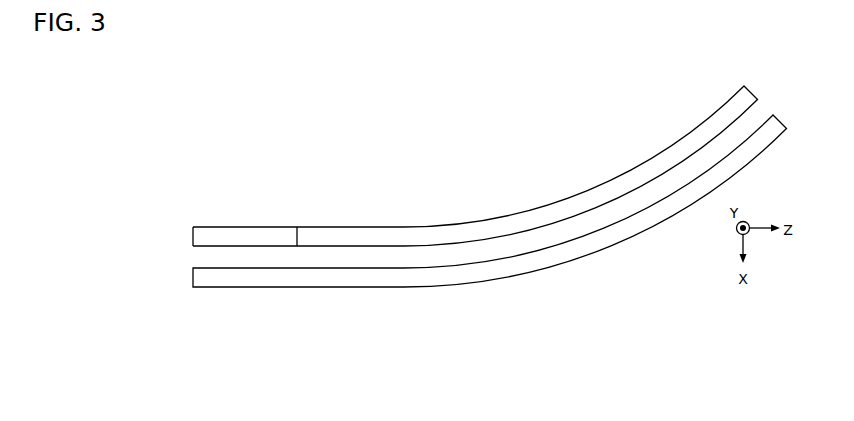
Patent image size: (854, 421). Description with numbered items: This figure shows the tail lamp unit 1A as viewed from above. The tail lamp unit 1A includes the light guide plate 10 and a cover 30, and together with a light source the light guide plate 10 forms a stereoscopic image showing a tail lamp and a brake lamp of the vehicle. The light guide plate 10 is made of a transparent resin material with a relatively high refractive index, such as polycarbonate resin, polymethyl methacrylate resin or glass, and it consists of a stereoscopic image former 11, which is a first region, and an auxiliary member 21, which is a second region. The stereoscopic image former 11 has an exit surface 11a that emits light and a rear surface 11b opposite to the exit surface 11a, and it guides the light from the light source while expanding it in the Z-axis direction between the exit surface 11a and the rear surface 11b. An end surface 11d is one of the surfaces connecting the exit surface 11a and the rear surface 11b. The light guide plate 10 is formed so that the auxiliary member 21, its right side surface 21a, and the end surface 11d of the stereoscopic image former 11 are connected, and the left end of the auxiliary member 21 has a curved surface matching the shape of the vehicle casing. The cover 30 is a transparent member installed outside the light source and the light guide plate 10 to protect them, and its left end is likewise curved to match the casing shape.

The tail lamp unit 1A is at (240, 118).
The light guide plate 10 is at (191, 238).
The stereoscopic image former 11 is at (540, 218).
The exit surface 11a is at (482, 238).
The rear surface 11b is at (593, 192).
The end surface 11d is at (298, 243).
The auxiliary member 21 is at (236, 237).
The right side surface 21a is at (293, 235).
The cover 30 is at (191, 280).